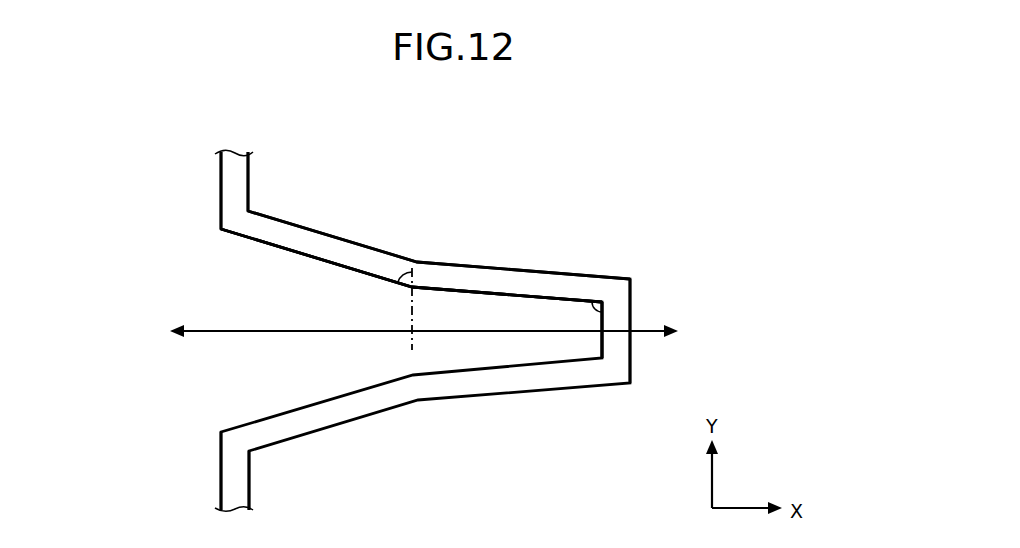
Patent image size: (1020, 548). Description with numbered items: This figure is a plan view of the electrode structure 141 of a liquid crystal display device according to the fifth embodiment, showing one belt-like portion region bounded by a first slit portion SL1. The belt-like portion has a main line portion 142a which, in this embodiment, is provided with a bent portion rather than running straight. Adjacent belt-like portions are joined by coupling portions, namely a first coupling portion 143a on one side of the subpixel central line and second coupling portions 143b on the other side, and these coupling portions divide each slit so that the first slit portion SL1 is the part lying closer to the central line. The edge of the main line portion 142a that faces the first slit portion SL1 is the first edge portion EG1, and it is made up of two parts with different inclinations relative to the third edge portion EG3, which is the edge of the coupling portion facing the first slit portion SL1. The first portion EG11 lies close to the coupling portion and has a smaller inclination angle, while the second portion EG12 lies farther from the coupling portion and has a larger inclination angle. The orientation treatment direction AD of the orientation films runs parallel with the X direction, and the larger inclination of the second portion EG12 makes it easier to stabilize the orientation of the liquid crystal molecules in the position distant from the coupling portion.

The pixel electrode 141 is at (637, 178).
The main line portion 142a is at (442, 262).
The first coupling portion 143a is at (622, 298).
The second coupling portion 143b is at (228, 200).
The first slit portion SL1 is at (240, 379).
The orientation treatment direction AD is at (220, 331).
The first edge portion EG1 is at (467, 468).
The first portion EG11 is at (483, 292).
The second portion EG12 is at (326, 262).
The third edge portion EG3 is at (603, 342).